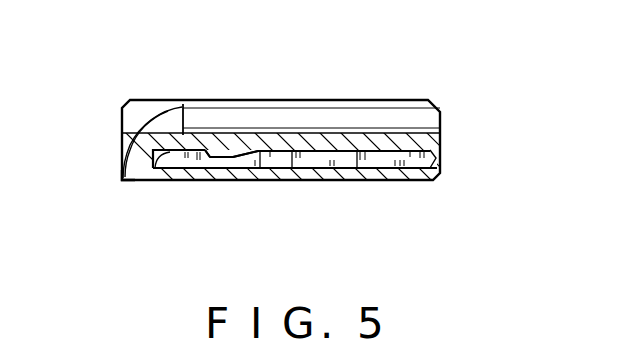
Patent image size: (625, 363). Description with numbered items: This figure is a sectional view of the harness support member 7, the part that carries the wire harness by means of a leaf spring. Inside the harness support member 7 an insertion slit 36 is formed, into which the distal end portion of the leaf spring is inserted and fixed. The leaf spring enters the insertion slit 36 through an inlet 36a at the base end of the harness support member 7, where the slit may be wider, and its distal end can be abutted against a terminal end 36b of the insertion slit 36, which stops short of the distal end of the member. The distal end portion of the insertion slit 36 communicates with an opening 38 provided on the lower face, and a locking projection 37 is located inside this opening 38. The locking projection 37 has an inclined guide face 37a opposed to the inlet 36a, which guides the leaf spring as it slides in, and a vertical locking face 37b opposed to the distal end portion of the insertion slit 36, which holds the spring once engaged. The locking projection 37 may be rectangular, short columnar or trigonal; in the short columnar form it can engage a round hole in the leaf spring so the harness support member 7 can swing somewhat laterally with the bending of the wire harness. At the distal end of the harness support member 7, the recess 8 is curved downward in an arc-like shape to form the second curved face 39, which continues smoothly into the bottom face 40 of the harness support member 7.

The harness support member 7 is at (373, 84).
The recess 8 is at (283, 128).
The insertion slit 36 is at (390, 158).
The inlet 36a is at (442, 155).
The terminal end 36b is at (165, 180).
The locking projection 37 is at (217, 163).
The inclined guide face 37a is at (250, 156).
The vertical locking face 37b is at (205, 152).
The opening 38 is at (211, 164).
The second curved face 39 is at (138, 128).
The bottom face 40 is at (131, 180).